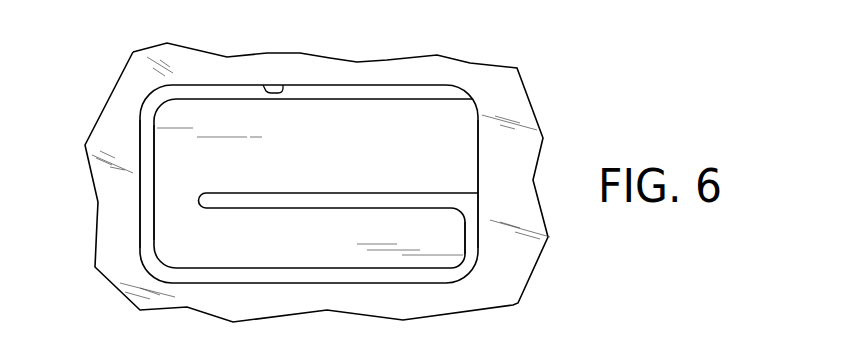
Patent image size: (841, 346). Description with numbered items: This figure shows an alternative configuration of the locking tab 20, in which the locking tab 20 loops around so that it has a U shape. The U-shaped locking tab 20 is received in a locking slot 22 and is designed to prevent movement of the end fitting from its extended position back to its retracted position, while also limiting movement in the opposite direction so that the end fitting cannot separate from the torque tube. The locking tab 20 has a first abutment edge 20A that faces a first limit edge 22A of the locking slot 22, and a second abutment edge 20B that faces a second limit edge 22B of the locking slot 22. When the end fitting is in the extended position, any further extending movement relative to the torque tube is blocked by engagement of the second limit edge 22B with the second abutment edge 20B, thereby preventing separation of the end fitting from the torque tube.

The locking tab 20 is at (330, 166).
The first abutment edge 20A is at (154, 172).
The second abutment edge 20B is at (463, 241).
The locking slot 22 is at (264, 85).
The first limit edge 22A is at (140, 147).
The second limit edge 22B is at (478, 218).